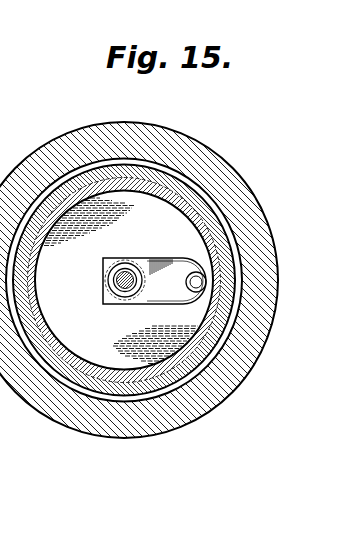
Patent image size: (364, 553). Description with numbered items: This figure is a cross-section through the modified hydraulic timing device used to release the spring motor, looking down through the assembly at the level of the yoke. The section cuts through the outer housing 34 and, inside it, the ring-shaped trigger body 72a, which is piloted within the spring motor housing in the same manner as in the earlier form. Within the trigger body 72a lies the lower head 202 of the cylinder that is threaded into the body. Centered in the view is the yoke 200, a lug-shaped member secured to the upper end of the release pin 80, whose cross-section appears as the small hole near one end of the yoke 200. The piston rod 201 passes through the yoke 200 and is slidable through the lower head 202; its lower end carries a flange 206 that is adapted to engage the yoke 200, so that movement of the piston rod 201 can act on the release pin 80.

The outer housing ring 34 is at (56, 136).
The trigger body 72a is at (170, 175).
The yoke 200 is at (167, 261).
The piston rod 201 is at (113, 278).
The flange 206 is at (110, 287).
The release pin 80 is at (192, 290).
The lower head 202 is at (121, 362).